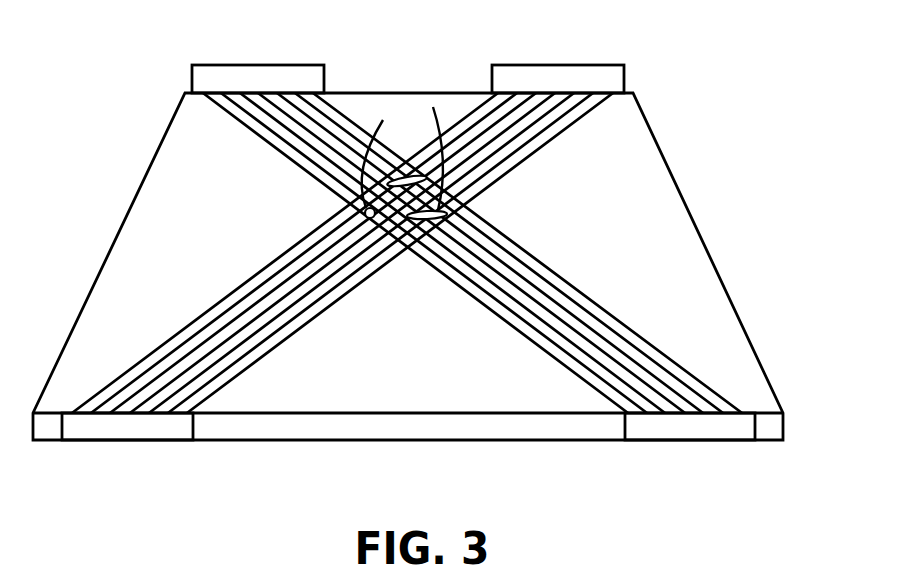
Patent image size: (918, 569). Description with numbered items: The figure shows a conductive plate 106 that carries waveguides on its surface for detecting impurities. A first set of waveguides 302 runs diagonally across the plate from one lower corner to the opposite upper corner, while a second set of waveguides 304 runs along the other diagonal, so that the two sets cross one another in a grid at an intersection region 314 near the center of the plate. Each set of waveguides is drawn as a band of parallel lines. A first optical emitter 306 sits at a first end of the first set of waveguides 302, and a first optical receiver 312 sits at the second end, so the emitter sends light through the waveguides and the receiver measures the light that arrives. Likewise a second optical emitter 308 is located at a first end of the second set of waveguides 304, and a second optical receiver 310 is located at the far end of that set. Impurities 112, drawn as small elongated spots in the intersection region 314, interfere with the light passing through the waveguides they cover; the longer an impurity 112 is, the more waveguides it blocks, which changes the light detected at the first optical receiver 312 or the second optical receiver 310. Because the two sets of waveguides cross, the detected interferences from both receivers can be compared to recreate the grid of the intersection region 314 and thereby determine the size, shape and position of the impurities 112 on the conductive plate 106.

The conductive plate 106 is at (682, 55).
The impurities 112 is at (409, 178).
The first set of waveguides 302 is at (255, 273).
The second set of waveguides 304 is at (582, 287).
The first optical emitter 306 is at (127, 431).
The second optical emitter 308 is at (690, 431).
The second optical receiver 310 is at (258, 65).
The first optical receiver 312 is at (572, 65).
The intersection region 314 is at (492, 207).